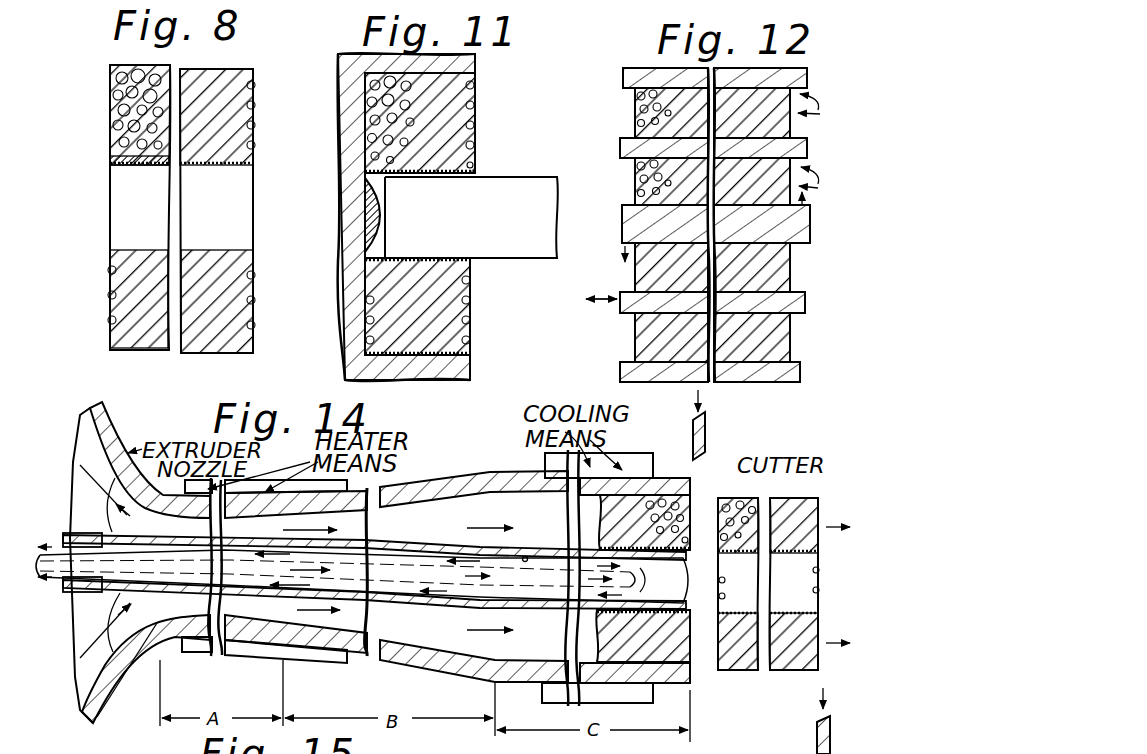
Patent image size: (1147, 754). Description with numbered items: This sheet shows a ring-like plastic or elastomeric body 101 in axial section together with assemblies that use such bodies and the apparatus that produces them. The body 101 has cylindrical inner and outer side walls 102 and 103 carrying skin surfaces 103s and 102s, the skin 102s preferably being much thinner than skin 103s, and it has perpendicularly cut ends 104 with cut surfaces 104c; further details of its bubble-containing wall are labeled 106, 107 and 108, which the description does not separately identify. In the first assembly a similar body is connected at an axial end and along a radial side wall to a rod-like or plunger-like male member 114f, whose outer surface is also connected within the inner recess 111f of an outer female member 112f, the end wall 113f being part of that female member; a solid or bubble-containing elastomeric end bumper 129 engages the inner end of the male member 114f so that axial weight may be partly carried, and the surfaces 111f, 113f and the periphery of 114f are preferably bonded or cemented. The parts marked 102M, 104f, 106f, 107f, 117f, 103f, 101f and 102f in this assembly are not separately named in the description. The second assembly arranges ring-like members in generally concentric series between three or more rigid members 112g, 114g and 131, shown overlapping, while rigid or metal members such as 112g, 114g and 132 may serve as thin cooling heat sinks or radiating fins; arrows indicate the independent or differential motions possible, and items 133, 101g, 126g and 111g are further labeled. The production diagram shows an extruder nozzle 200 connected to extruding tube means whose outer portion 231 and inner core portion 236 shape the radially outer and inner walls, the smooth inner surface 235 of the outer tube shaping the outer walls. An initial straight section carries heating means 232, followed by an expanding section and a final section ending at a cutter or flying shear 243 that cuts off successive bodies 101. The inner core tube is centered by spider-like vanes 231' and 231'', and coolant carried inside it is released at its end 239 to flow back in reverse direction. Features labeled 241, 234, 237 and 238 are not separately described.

In FIG. 8, the plastic or elastomeric body 101 is at (218, 68).
In FIG. 14, the plastic or elastomeric body 101 is at (780, 673).
In FIG. 8, the cylindrical inner side wall 102 is at (112, 350).
In FIG. 8, the skin surface 102s is at (183, 353).
In FIG. 12, the skin surface 102s is at (684, 86).
In FIG. 8, the cylindrical outer side wall 103 is at (118, 247).
In FIG. 8, the skin surface 103s is at (222, 250).
In FIG. 12, the skin surface 103s is at (636, 127).
In FIG. 8, the cut ends 104 is at (253, 128).
In FIG. 8, the cut surfaces 104c is at (112, 144).
In FIG. 11, the cut surfaces 104c is at (365, 95).
In FIG. 14, the cut surfaces 104c is at (687, 653).
In FIG. 8, the inner skin layer 106 is at (112, 160).
In FIG. 8, the cellular core 107 is at (114, 112).
In FIG. 8, the large cells 108 is at (118, 79).
In FIG. 11, the mold block 102M is at (476, 73).
In FIG. 11, the product wall 104f is at (365, 108).
In FIG. 11, the skin layer 106f is at (425, 89).
In FIG. 11, the cellular core 107f is at (430, 118).
In FIG. 11, the end bumper 129 is at (368, 193).
In FIG. 11, the tube 117f is at (387, 217).
In FIG. 11, the cavity 103f is at (448, 258).
In FIG. 11, the male member 114f is at (498, 258).
In FIG. 11, the end wall 113f is at (366, 295).
In FIG. 11, the product 101f is at (480, 332).
In FIG. 11, the mold 102f is at (470, 363).
In FIG. 11, the inner recess 111f is at (364, 352).
In FIG. 11, the outer female member 112f is at (362, 381).
In FIG. 12, the rigid member 131 is at (625, 205).
In FIG. 12, the rigid metal member 132 is at (797, 257).
In FIG. 12, the movement 133 is at (625, 268).
In FIG. 12, the product 101g is at (795, 278).
In FIG. 12, the rigid member 114g is at (800, 305).
In FIG. 12, the product section 126g is at (795, 315).
In FIG. 12, the bottom plate 111g is at (793, 362).
In FIG. 12, the rigid member 112g is at (757, 388).
In FIG. 12, the cutter 243 is at (707, 432).
In FIG. 14, the extruder nozzle 200 is at (108, 716).
In FIG. 14, the extruder nozzle 241 is at (93, 635).
In FIG. 14, the outer tube member 231 is at (474, 562).
In FIG. 14, the spider-like member 231' is at (146, 520).
In FIG. 14, the spider-like member 231'' is at (152, 606).
In FIG. 14, the heating means 232 is at (280, 647).
In FIG. 14, the cooled tube section 234 is at (627, 698).
In FIG. 14, the smooth inner surface 235 is at (428, 506).
In FIG. 14, the inner core tube 236 is at (452, 541).
In FIG. 14, the inner tube 237 is at (526, 556).
In FIG. 14, the annular passage 238 is at (463, 575).
In FIG. 14, the end of inner tube 239 is at (633, 570).